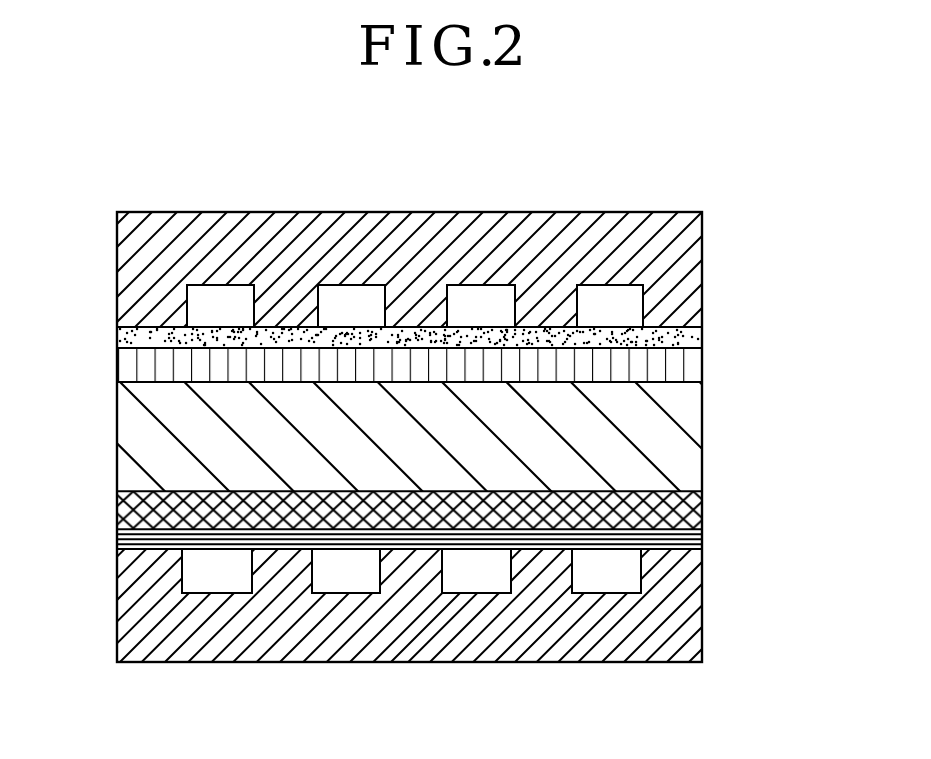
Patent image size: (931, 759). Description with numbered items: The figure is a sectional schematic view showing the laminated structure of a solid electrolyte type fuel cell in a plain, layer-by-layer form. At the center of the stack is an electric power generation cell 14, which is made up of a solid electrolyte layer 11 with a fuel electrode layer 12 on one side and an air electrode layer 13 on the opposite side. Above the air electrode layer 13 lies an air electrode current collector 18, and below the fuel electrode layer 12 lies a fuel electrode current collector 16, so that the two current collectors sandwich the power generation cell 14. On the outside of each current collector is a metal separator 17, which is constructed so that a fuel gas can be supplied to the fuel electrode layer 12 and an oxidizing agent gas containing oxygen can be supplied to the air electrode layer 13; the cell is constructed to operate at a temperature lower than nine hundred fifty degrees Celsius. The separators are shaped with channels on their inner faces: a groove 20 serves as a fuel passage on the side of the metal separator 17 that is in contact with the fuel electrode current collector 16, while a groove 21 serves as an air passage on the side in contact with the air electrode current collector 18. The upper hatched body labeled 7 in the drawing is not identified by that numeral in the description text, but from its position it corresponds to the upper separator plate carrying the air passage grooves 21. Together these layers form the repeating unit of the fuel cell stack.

The first substrate 7 is at (403, 246).
The air electrode current collector 18 is at (688, 337).
The air electrode layer 13 is at (690, 362).
The solid electrolyte layer 11 is at (683, 406).
The electric power generation cell 14 is at (421, 417).
The fuel electrode layer 12 is at (444, 508).
The fuel electrode current collector 16 is at (698, 540).
The metal separator 17 is at (409, 639).
The groove 20 is at (217, 580).
The groove 21 is at (192, 297).